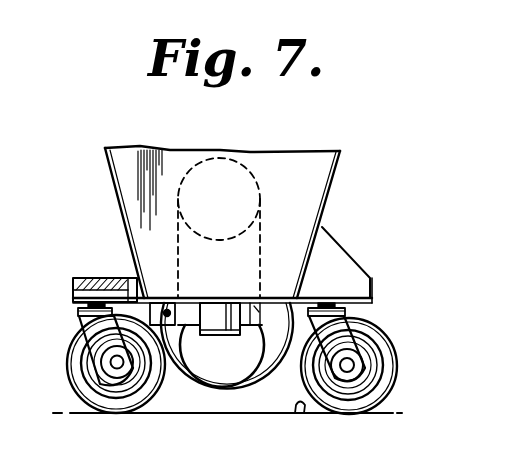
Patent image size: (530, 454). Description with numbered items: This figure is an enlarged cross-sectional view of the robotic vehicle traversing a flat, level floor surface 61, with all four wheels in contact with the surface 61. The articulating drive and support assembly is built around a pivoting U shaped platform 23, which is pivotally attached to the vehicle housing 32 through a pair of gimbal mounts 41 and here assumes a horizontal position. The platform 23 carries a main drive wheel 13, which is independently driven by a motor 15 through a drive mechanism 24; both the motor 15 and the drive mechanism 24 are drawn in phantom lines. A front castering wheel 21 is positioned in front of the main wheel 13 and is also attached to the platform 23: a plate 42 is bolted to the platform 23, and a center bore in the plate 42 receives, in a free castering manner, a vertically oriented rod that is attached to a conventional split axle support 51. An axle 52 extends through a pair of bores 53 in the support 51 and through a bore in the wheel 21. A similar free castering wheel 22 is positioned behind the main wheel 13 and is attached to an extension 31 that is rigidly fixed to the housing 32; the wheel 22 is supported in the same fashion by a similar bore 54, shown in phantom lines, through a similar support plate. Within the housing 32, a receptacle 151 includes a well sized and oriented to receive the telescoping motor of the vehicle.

The main drive wheel 13 is at (219, 412).
The motor 15 is at (258, 212).
The front castering wheel 21 is at (77, 385).
The rear castering wheel 22 is at (371, 340).
The U shaped platform 23 is at (77, 277).
The drive mechanism 24 is at (261, 274).
The extension 31 is at (340, 252).
The vehicle housing 32 is at (123, 200).
The gimbal mount 41 is at (161, 298).
The plate 42 is at (73, 296).
The split axle support 51 is at (79, 315).
The axle 52 is at (117, 358).
The bore 53 is at (110, 362).
The bore 54 is at (334, 287).
The floor surface 61 is at (296, 413).
The receptacle 151 is at (234, 338).